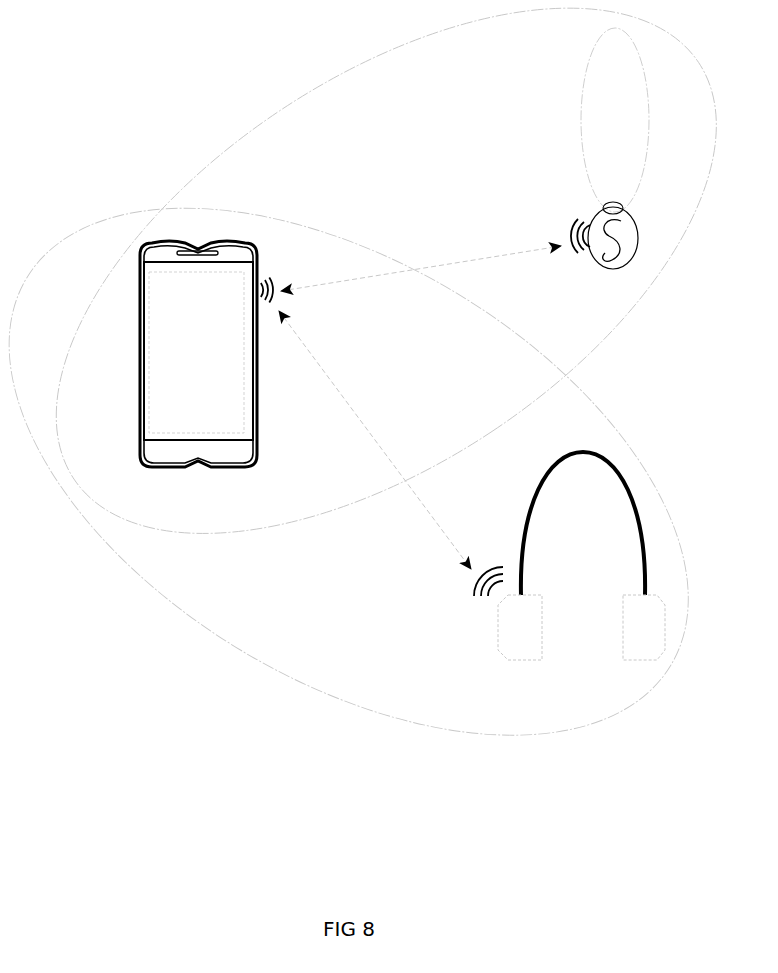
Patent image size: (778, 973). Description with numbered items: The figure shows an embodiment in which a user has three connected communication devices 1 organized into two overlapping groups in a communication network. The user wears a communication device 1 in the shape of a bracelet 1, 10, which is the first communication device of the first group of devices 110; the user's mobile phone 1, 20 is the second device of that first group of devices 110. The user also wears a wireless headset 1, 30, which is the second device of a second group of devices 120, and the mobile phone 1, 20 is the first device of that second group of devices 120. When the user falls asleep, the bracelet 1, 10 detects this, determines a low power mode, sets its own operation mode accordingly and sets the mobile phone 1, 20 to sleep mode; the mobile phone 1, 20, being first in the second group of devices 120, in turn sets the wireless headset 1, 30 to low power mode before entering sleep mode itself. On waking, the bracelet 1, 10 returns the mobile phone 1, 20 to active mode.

The communication device 1 is at (362, 336).
The bracelet 10 is at (581, 47).
The mobile phone 20 is at (174, 238).
The wireless headset 30 is at (552, 454).
The first group of devices 110 is at (313, 84).
The second group of devices 120 is at (320, 691).